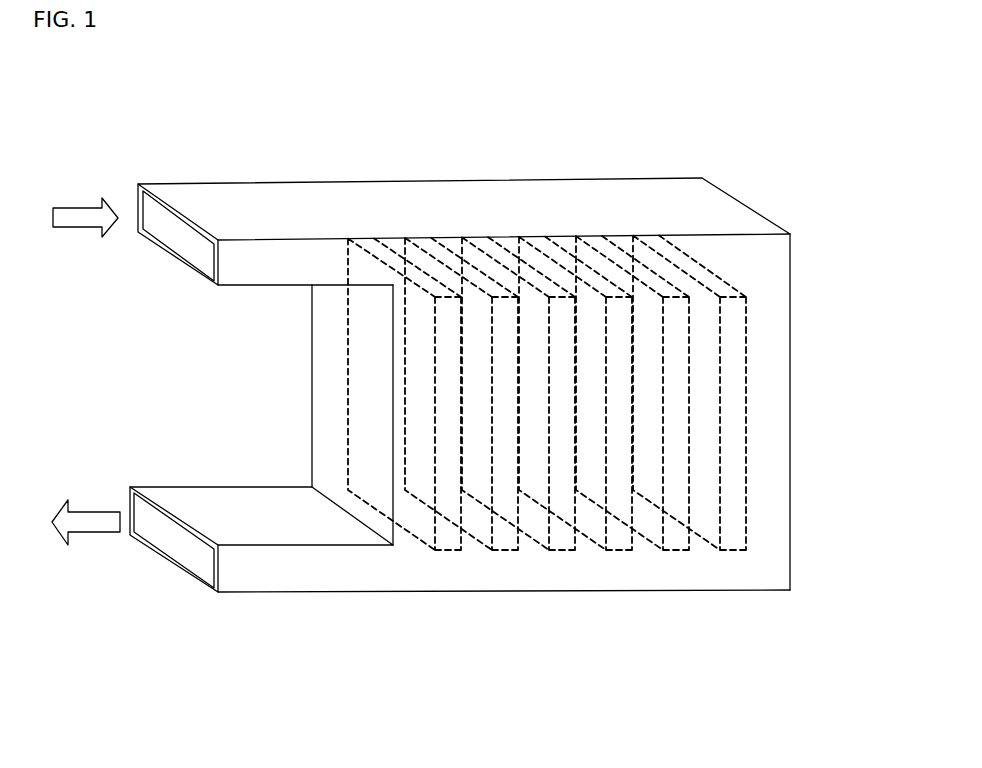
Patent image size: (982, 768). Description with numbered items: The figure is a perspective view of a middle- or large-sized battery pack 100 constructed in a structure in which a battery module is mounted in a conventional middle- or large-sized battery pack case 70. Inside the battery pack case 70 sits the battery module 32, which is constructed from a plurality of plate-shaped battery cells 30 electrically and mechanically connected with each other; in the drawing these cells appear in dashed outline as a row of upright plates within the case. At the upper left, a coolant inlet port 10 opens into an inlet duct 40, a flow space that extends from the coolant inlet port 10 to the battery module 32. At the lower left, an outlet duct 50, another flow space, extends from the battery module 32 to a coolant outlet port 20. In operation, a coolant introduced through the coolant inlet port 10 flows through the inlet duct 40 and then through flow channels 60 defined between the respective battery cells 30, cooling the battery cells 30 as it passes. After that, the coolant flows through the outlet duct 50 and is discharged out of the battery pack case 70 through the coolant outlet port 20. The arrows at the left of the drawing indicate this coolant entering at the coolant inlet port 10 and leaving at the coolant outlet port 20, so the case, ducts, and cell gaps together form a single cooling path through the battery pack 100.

The middle- or large-sized battery pack 100 is at (153, 116).
The coolant inlet port 10 is at (177, 240).
The coolant outlet port 20 is at (168, 542).
The plate-shaped battery cells 30 is at (737, 452).
The battery module 32 is at (564, 419).
The inlet duct 40 is at (293, 263).
The outlet duct 50 is at (287, 578).
The flow channels 60 is at (698, 295).
The battery pack case 70 is at (457, 180).